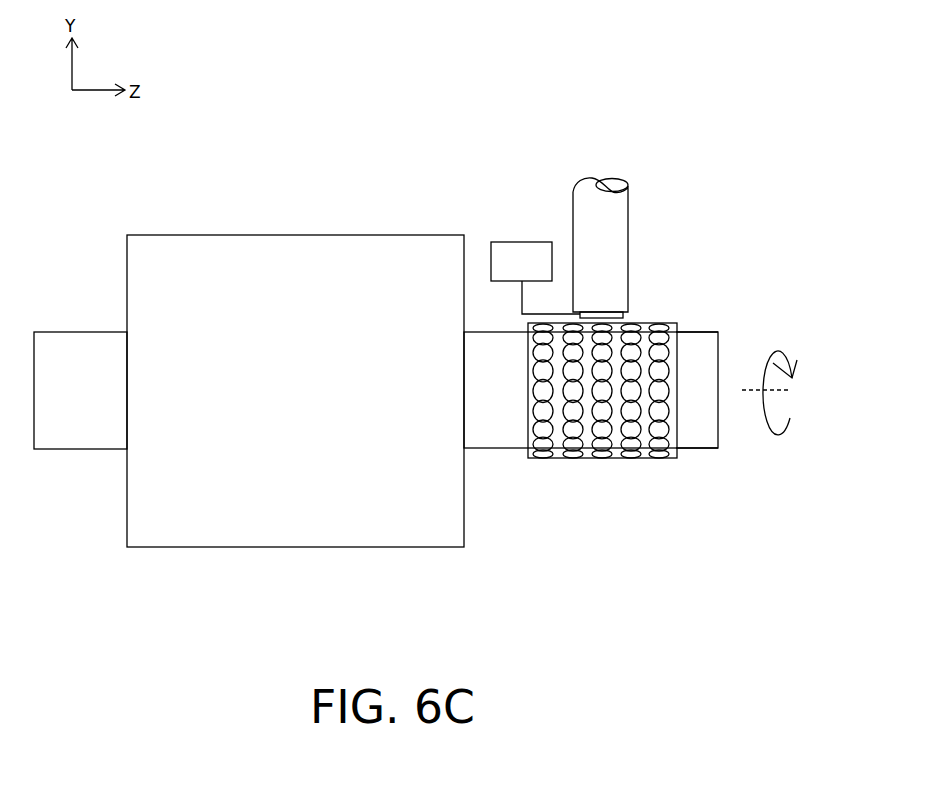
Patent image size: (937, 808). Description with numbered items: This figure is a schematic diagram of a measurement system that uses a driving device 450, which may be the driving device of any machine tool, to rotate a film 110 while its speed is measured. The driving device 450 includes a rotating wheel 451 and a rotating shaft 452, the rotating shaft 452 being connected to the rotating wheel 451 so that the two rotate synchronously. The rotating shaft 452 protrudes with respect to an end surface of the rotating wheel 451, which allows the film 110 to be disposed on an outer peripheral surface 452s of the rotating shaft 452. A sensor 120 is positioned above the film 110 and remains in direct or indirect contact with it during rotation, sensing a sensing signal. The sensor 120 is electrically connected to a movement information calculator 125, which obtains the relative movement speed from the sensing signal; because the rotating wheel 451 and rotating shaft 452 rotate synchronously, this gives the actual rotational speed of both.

The film 110 is at (678, 455).
The sensor 120 is at (635, 316).
The movement information calculator 125 is at (542, 272).
The driving device 450 is at (414, 438).
The rotating wheel 451 is at (420, 522).
The rotating shaft 452 is at (502, 430).
The outer peripheral surface 452s is at (697, 332).